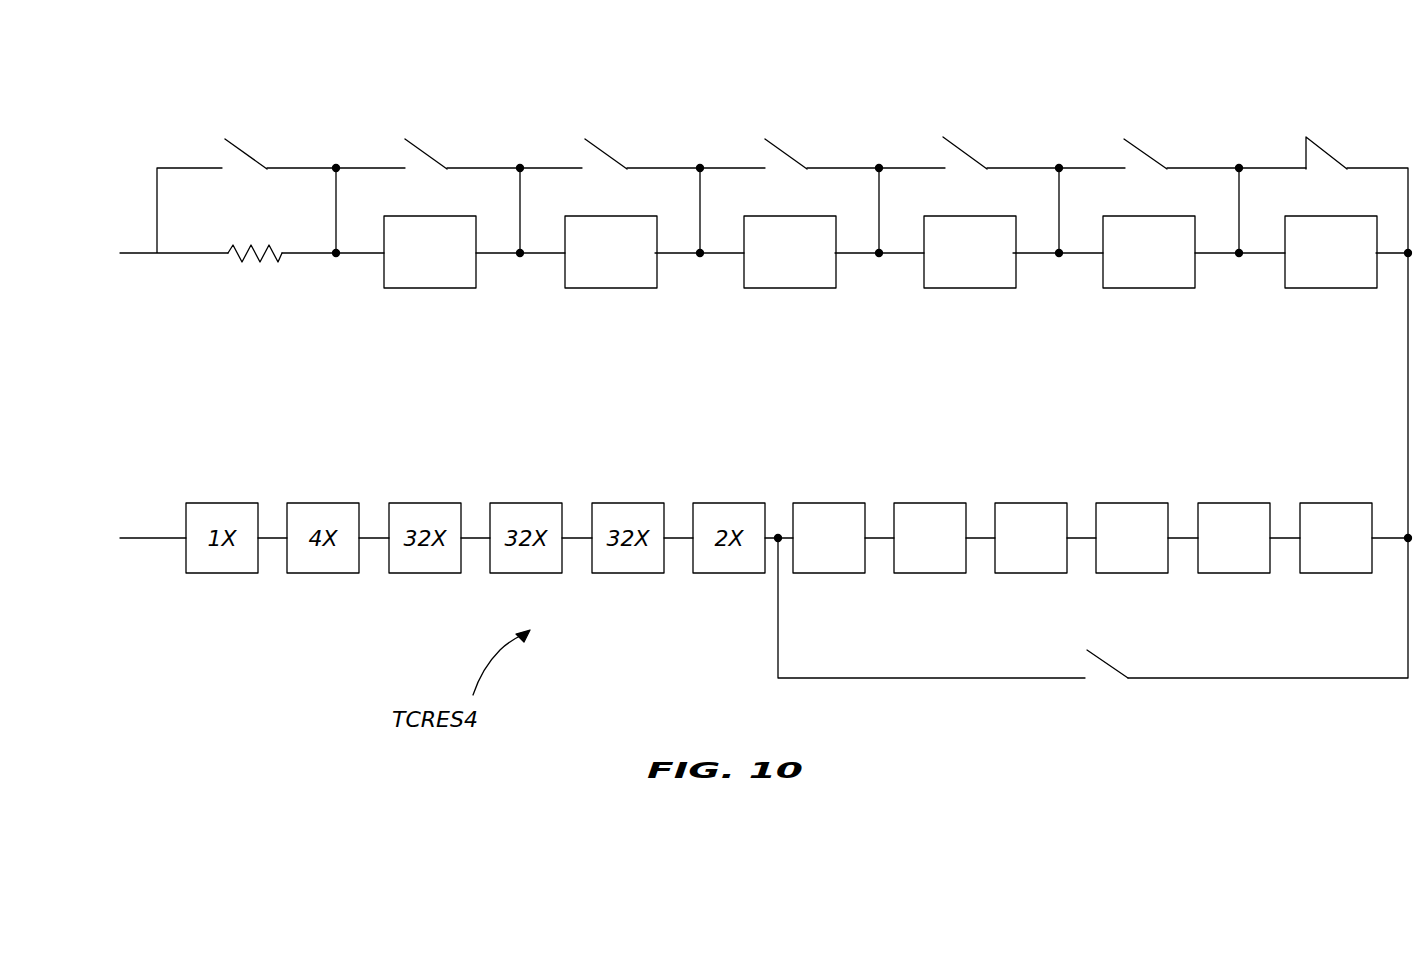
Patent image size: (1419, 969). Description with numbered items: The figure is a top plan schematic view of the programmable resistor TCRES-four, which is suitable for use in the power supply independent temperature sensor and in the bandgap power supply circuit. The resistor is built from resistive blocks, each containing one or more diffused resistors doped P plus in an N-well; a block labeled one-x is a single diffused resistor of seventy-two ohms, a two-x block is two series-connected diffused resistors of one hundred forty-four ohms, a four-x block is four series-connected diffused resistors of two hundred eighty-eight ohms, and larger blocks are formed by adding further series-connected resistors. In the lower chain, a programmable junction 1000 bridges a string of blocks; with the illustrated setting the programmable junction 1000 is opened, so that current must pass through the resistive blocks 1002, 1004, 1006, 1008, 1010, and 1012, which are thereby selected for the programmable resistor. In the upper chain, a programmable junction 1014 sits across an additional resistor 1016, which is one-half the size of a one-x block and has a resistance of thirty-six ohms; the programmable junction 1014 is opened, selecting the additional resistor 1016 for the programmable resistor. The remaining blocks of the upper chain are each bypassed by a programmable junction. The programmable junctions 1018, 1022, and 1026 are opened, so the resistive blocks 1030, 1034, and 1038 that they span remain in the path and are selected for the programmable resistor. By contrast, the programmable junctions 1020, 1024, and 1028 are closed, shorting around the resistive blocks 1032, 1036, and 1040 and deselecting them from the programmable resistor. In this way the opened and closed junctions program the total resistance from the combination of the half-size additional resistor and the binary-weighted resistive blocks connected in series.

The programmable junction 1000 is at (1108, 660).
The resistive block 1002 is at (1338, 502).
The resistive block 1004 is at (1237, 502).
The resistive block 1006 is at (1133, 502).
The resistive block 1008 is at (1033, 502).
The resistive block 1010 is at (933, 502).
The resistive block 1012 is at (842, 502).
The programmable junction 1014 is at (243, 148).
The additional resistor 1016 is at (258, 262).
The programmable junction 1018 is at (425, 148).
The programmable junction 1020 is at (603, 152).
The programmable junction 1022 is at (783, 152).
The programmable junction 1024 is at (965, 150).
The programmable junction 1026 is at (1146, 150).
The programmable junction 1028 is at (1328, 147).
The resistive block 1030 is at (425, 288).
The resistive block 1032 is at (607, 288).
The resistive block 1034 is at (787, 288).
The resistive block 1036 is at (965, 288).
The resistive block 1038 is at (1138, 288).
The resistive block 1040 is at (1318, 288).